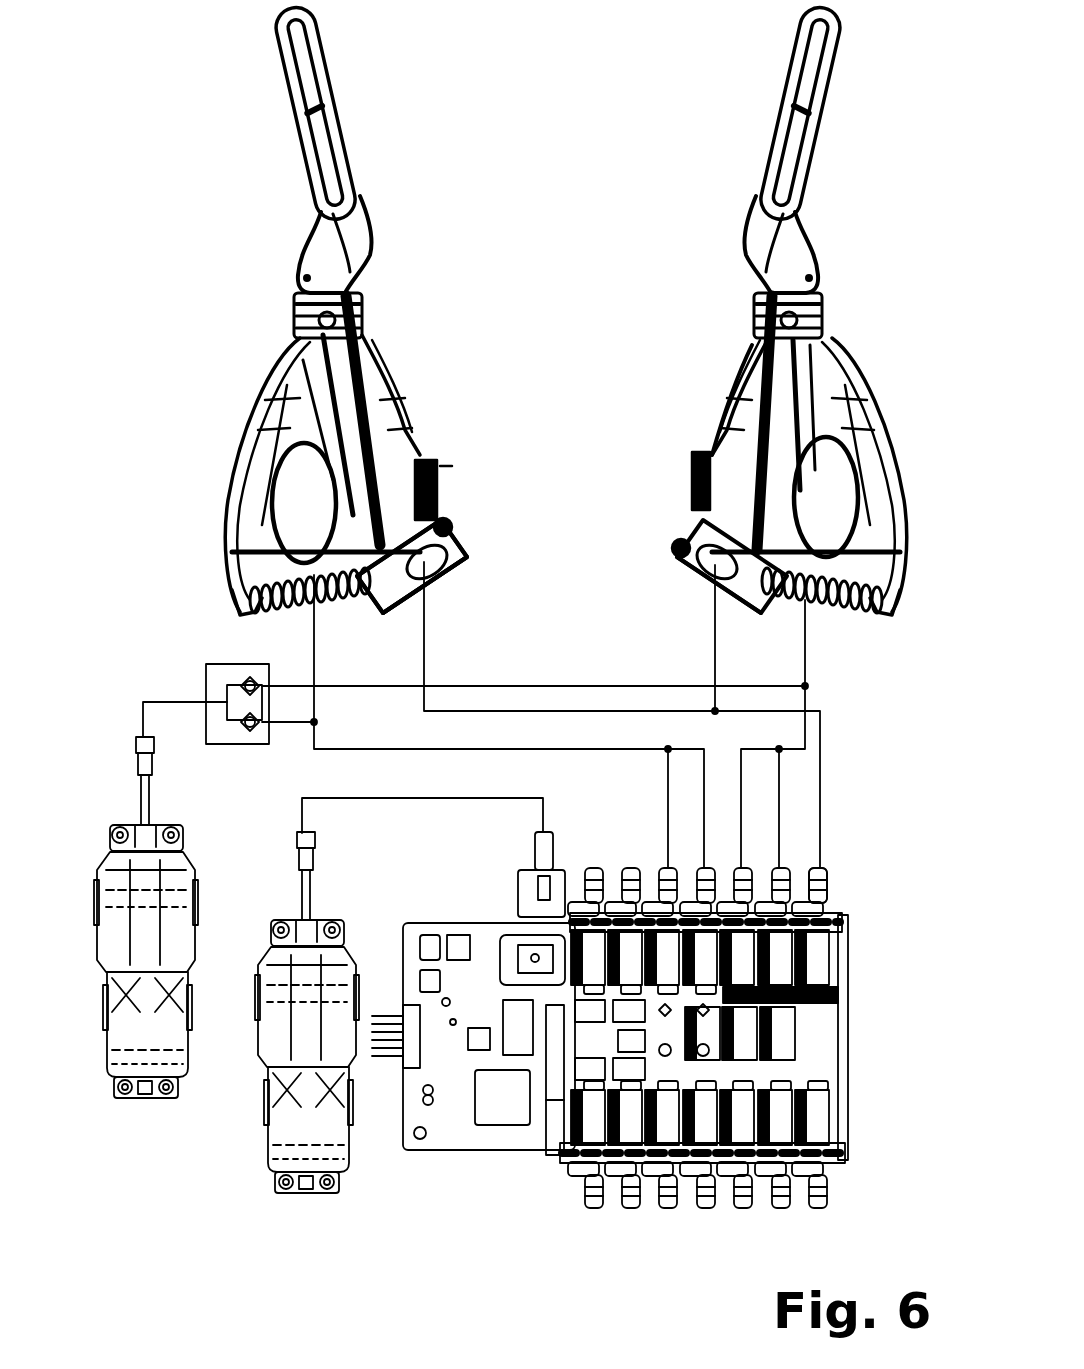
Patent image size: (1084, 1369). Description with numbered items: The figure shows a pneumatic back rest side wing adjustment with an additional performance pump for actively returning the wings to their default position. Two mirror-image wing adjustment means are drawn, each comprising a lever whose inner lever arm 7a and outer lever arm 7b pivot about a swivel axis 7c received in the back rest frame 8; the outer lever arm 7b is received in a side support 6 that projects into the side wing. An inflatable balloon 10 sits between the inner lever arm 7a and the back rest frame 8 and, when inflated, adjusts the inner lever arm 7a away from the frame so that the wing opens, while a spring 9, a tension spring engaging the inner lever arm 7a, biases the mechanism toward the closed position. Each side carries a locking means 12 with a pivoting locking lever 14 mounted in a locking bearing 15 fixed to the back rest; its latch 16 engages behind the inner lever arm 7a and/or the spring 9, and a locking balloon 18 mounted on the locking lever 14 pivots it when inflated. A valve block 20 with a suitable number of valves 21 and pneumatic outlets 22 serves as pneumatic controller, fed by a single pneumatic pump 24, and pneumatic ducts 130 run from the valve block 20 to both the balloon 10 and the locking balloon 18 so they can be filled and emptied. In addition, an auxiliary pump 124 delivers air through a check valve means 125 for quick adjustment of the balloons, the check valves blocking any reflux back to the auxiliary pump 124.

The side support 6 is at (322, 34).
The inner lever arm 7a is at (378, 398).
The outer lever arm 7b is at (334, 146).
The swivel axis 7c is at (360, 296).
The back rest frame 8 is at (250, 412).
The spring 9 is at (288, 620).
The inflatable balloon 10 is at (292, 514).
The locking means 12 is at (474, 520).
The locking lever 14 is at (478, 548).
The locking bearing 15 is at (446, 520).
The latch 16 is at (384, 620).
The locking balloon 18 is at (440, 572).
The valve block 20 is at (664, 1015).
The valves 21 is at (822, 943).
The pneumatic outlets 22 is at (830, 877).
The pneumatic pump 24 is at (277, 1132).
The auxiliary pump 124 is at (125, 1027).
The check valve means 125 is at (208, 664).
The pneumatic ducts 130 is at (142, 700).